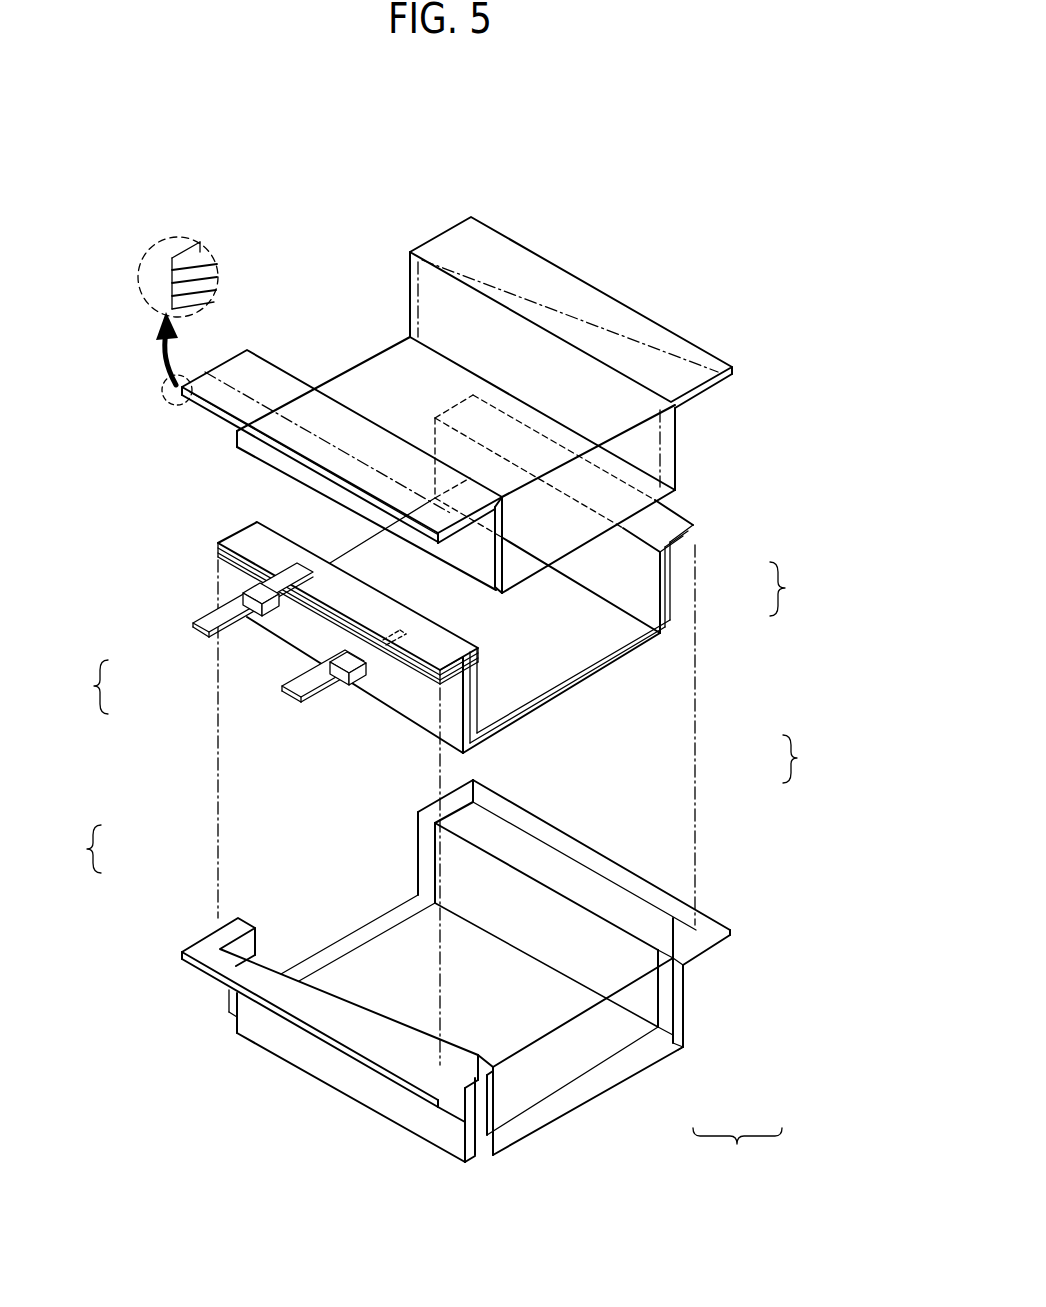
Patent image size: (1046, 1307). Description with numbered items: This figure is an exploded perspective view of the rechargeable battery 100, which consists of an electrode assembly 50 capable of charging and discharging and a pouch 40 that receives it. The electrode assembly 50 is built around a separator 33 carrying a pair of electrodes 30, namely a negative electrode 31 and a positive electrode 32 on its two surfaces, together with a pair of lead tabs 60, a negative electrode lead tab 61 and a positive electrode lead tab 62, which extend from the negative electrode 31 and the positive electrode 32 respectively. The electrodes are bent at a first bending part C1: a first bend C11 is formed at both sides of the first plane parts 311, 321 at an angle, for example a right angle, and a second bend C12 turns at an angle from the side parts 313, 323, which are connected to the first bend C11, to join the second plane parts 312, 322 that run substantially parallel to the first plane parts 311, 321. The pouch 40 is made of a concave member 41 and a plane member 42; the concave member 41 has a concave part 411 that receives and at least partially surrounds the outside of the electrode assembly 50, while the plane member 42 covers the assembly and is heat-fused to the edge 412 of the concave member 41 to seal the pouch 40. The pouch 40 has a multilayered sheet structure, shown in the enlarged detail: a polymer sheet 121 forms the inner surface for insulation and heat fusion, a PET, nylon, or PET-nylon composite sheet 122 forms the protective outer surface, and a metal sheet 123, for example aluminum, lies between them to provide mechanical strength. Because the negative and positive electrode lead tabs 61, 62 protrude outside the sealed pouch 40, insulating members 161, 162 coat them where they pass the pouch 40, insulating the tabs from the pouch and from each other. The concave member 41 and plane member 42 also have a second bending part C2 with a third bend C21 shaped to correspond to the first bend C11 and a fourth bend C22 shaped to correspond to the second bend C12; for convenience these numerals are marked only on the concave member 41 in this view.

The rechargeable battery 100 is at (404, 116).
The polymer sheet 121 is at (168, 299).
The PET, nylon, or PET-nylon composite sheet 122 is at (169, 266).
The metal sheet 123 is at (169, 283).
The electrodes 30 is at (267, 678).
The negative electrode 31 is at (246, 544).
The positive electrode 32 is at (218, 583).
The separator 33 is at (233, 556).
The first plane part 311 is at (530, 708).
The second plane part 312 is at (408, 655).
The side part 313 is at (478, 670).
The first plane part 321 is at (577, 688).
The second plane part 322 is at (438, 672).
The side part 323 is at (465, 708).
The pouch 40 is at (805, 759).
The concave member 41 is at (488, 949).
The plane member 42 is at (422, 501).
The concave part 411 is at (409, 964).
The edge 412 is at (332, 953).
The electrode assembly 50 is at (436, 635).
The lead tabs 60 is at (214, 653).
The negative electrode lead tab 61 is at (212, 623).
The positive electrode lead tab 62 is at (239, 696).
The insulating member 161 is at (243, 600).
The insulating member 162 is at (352, 680).
The first bending part C1 is at (737, 579).
The first bend C11 is at (677, 632).
The second bend C12 is at (676, 552).
The second bending part C2 is at (730, 1065).
The third bend C21 is at (682, 1047).
The fourth bend C22 is at (686, 972).